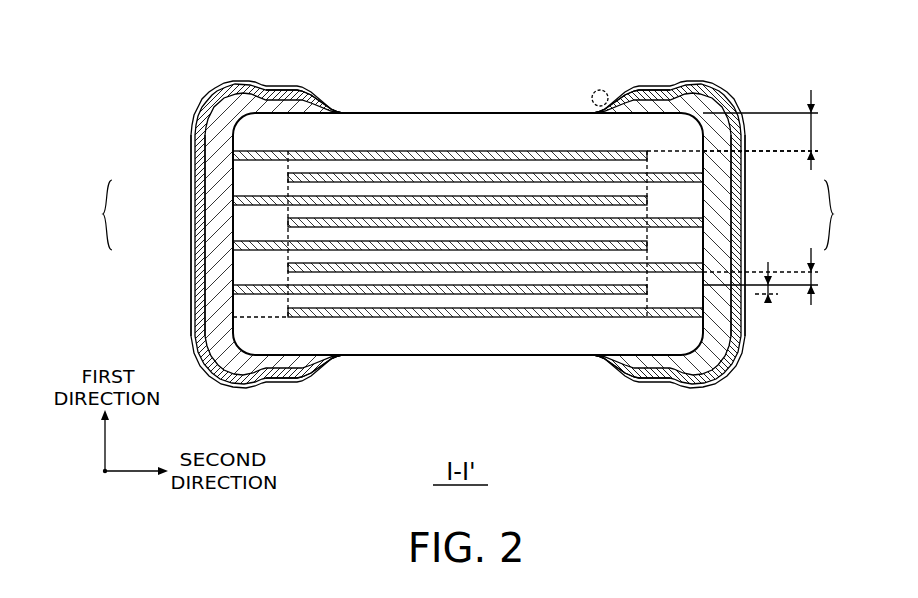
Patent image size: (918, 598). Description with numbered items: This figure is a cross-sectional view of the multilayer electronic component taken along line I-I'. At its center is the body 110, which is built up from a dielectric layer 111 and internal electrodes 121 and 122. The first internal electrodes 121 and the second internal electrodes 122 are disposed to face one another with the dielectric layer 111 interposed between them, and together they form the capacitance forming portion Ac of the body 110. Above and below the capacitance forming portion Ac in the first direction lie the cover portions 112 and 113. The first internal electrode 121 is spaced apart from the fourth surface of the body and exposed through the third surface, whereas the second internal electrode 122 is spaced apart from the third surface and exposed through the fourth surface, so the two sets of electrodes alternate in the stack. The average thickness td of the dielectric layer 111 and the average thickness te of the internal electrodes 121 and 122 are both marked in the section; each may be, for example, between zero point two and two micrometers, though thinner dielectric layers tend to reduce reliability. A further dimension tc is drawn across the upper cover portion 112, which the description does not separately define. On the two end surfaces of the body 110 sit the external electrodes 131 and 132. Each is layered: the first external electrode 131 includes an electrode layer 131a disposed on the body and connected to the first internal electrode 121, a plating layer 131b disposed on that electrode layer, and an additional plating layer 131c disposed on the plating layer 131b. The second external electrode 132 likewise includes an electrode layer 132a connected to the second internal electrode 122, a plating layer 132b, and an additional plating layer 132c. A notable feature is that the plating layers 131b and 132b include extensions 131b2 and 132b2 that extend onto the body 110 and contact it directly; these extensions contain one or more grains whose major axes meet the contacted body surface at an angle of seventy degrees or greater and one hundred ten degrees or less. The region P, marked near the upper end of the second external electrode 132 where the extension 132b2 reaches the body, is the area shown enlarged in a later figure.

The body 110 is at (410, 112).
The dielectric layer 111 is at (372, 190).
The cover portion 112 is at (470, 130).
The cover portion 113 is at (483, 337).
The first internal electrode 121 is at (518, 151).
The second internal electrode 122 is at (547, 172).
The first external electrode 131 is at (210, 224).
The electrode layer 131a is at (218, 185).
The plating layer 131b is at (200, 212).
The extension 131b2 is at (341, 108).
The additional plating layer 131c is at (193, 241).
The second external electrode 132 is at (726, 224).
The electrode layer 132a is at (718, 184).
The plating layer 132b is at (737, 212).
The extension 132b2 is at (596, 108).
The additional plating layer 132c is at (744, 241).
The region P is at (606, 92).
The capacitance forming portion Ac is at (546, 320).
The cover thickness tc is at (771, 130).
The average thickness of the dielectric layer td is at (772, 276).
The average thickness of the internal electrodes te is at (775, 286).